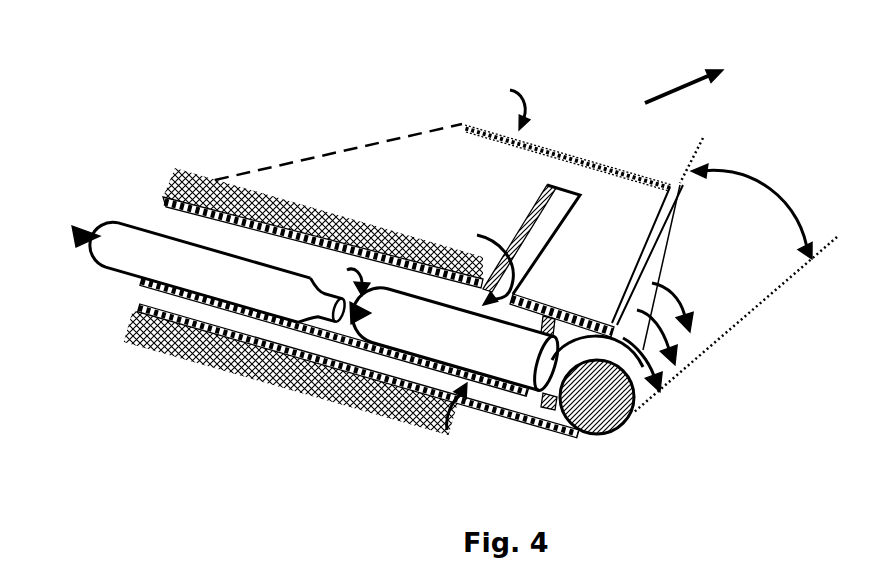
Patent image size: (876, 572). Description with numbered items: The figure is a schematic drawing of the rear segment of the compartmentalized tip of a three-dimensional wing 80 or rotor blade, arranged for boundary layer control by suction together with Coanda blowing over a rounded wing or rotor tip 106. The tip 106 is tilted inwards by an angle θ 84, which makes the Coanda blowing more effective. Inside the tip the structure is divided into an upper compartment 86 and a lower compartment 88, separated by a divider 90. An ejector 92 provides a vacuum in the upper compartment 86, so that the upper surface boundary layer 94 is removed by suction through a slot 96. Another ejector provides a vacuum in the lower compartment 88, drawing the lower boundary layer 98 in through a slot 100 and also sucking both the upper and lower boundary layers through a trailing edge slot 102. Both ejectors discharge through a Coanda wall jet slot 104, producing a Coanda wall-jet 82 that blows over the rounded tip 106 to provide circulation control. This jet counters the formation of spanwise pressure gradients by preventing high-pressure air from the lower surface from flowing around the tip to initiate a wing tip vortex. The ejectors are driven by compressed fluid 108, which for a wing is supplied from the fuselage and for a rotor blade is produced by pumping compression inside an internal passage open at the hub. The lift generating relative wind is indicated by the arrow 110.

The 3-D wing 80 is at (370, 180).
The Coanda wall-jet 82 is at (683, 333).
The angle θ 84 is at (757, 210).
The upper compartment 86 is at (170, 220).
The lower compartment 88 is at (143, 282).
The divider 90 is at (372, 340).
The ejector 92 is at (308, 303).
The upper surface boundary layer 94 is at (215, 182).
The slot 96 is at (528, 243).
The lower boundary layer 98 is at (170, 350).
The slot 100 is at (453, 427).
The trailing edge slot 102 is at (567, 130).
The Coanda wall jet slot 104 is at (650, 260).
The rounded tip 106 is at (620, 428).
The compressed fluid 108 is at (78, 236).
The arrow 110 is at (710, 80).